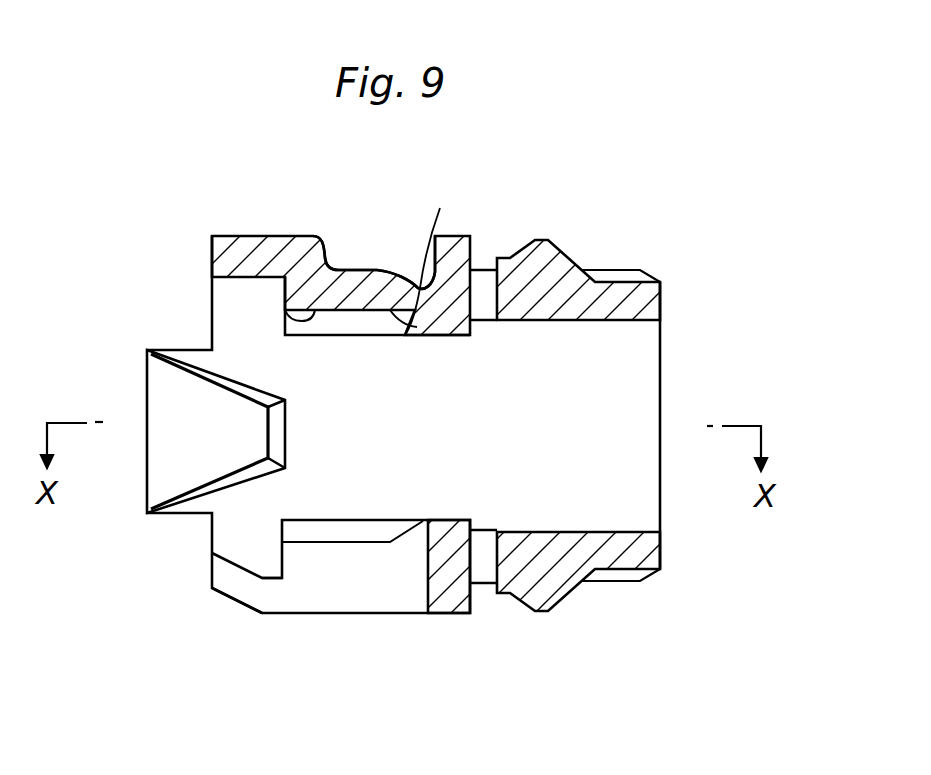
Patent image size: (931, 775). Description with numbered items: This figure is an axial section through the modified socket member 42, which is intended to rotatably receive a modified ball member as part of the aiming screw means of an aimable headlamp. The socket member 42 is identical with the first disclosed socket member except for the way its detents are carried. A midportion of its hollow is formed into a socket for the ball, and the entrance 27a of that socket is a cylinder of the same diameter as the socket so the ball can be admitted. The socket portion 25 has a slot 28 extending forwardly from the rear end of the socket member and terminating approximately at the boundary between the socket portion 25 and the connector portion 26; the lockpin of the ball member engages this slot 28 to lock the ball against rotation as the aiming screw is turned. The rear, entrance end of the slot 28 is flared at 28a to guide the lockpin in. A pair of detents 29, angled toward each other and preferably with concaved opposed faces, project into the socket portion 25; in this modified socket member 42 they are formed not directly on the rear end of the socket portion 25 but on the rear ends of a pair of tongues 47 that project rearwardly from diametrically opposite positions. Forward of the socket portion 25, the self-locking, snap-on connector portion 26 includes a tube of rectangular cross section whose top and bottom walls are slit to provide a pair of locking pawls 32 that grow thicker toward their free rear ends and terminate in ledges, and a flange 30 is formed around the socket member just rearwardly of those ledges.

The socket portion 25 is at (345, 271).
The modified socket member 42 is at (377, 265).
The entrance 27a is at (315, 323).
The locking pawls 32 is at (560, 244).
The connector portion 26 is at (632, 270).
The detents 29 is at (240, 438).
The tongues 47 is at (200, 514).
The flared entrance end portion of slot 28a is at (244, 591).
The slot 28 is at (353, 595).
The flange 30 is at (458, 605).